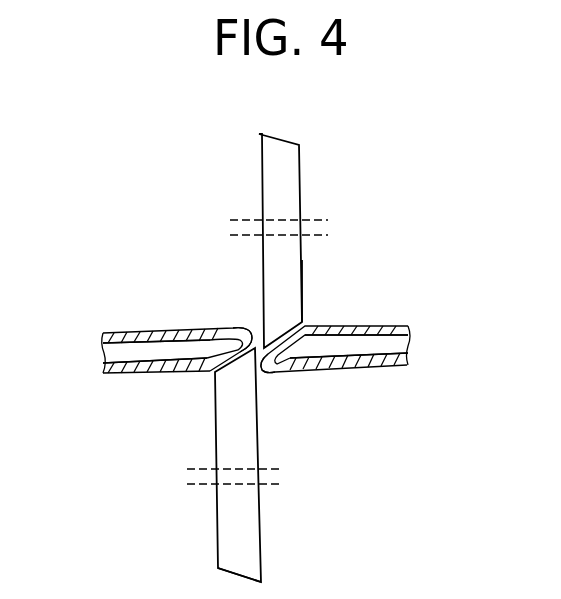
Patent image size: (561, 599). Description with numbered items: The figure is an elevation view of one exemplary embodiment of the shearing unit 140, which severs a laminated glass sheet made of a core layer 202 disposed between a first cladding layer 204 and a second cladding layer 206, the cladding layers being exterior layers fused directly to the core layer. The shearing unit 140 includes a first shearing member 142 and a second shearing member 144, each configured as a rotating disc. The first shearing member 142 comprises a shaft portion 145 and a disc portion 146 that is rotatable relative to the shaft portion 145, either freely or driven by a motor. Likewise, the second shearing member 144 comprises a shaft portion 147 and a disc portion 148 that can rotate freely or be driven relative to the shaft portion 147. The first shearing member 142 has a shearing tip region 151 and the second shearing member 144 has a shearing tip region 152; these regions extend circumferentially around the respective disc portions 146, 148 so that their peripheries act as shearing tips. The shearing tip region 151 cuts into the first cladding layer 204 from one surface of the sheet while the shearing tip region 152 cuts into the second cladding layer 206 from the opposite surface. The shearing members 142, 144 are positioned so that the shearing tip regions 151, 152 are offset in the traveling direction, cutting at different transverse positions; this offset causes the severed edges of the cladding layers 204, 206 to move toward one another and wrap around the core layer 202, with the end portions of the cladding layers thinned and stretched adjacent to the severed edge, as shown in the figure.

The shearing unit 140 is at (147, 213).
The first shearing member 142 is at (302, 178).
The second shearing member 144 is at (215, 418).
The shaft portion 145 is at (318, 237).
The disc portion 146 is at (302, 292).
The shaft portion 147 is at (273, 487).
The disc portion 148 is at (262, 563).
The shearing tip region 151 is at (283, 350).
The shearing tip region 152 is at (238, 346).
The core layer 202 is at (108, 357).
The first cladding layer 204 is at (103, 336).
The second cladding layer 206 is at (103, 370).